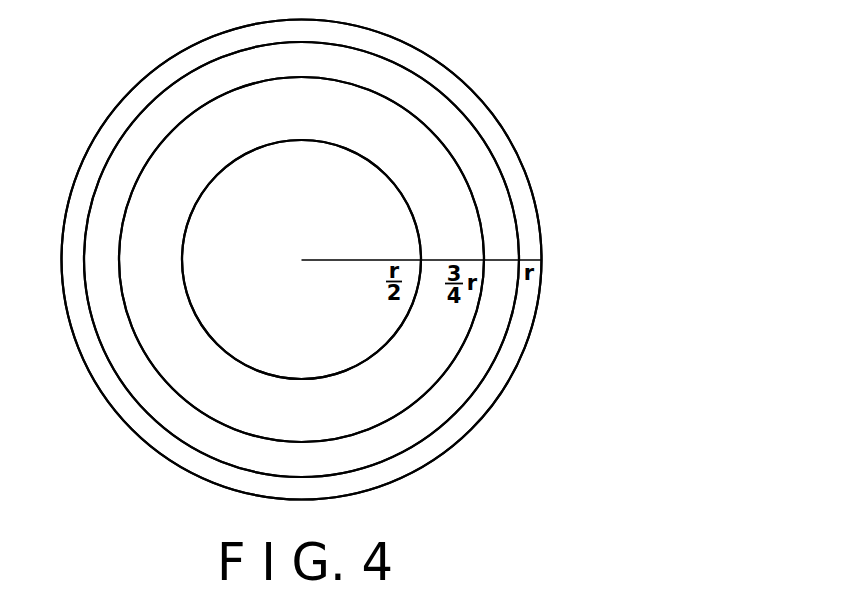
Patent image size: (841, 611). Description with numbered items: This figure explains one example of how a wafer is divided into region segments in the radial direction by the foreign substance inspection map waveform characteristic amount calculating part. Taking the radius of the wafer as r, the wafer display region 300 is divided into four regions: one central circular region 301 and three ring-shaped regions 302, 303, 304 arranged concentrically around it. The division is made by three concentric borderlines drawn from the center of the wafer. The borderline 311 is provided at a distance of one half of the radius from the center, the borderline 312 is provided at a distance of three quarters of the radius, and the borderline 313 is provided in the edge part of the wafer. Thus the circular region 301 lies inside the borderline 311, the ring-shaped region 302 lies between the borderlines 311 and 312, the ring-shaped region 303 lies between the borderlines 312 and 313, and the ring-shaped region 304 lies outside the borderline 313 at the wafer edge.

The wafer display region 300 is at (616, 335).
The circular region 301 is at (382, 325).
The ring-shaped region 302 is at (425, 361).
The ring-shaped region 303 is at (453, 388).
The ring-shaped region 304 is at (464, 420).
The borderline 311 is at (356, 151).
The borderline 312 is at (443, 143).
The borderline 313 is at (502, 180).